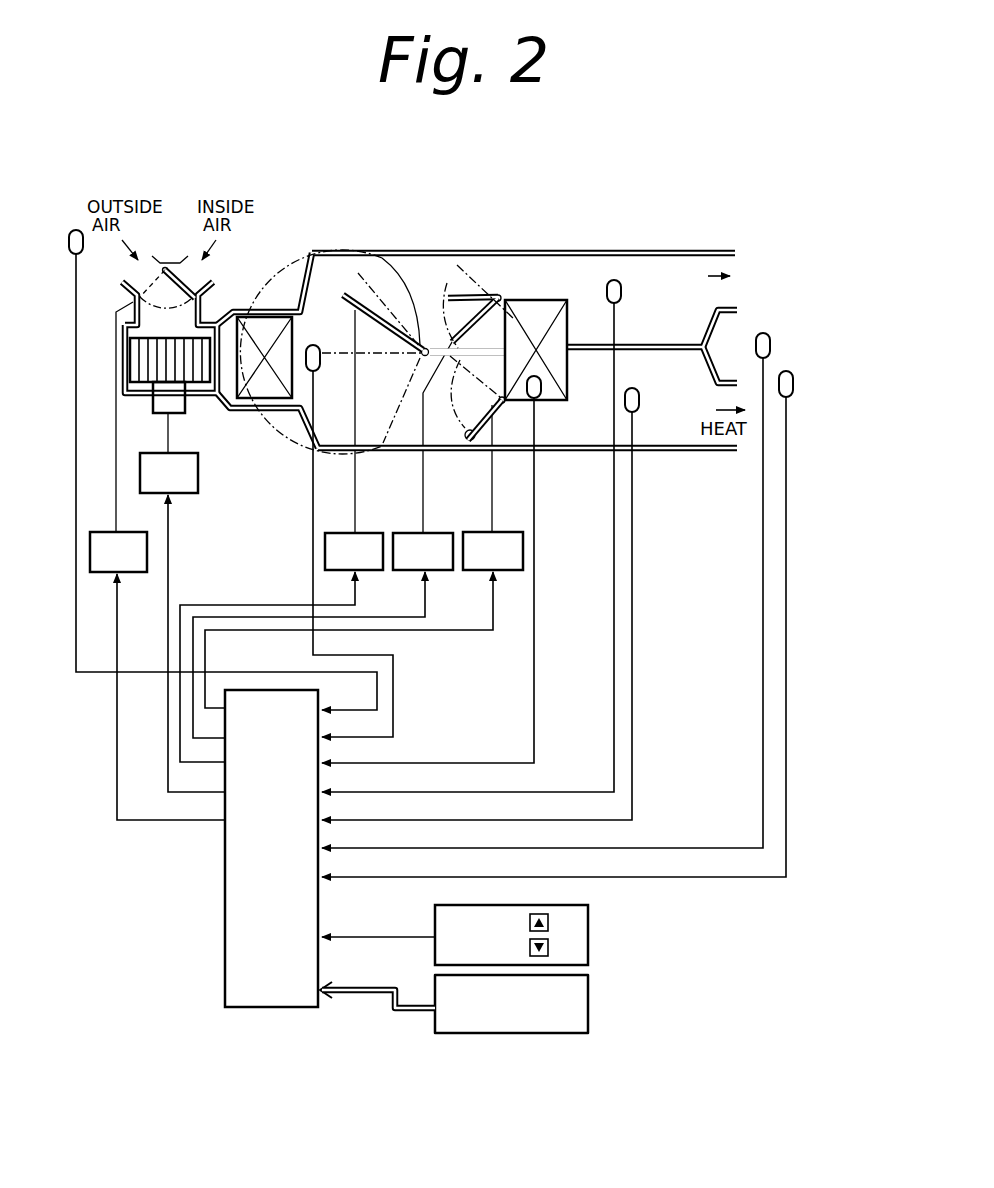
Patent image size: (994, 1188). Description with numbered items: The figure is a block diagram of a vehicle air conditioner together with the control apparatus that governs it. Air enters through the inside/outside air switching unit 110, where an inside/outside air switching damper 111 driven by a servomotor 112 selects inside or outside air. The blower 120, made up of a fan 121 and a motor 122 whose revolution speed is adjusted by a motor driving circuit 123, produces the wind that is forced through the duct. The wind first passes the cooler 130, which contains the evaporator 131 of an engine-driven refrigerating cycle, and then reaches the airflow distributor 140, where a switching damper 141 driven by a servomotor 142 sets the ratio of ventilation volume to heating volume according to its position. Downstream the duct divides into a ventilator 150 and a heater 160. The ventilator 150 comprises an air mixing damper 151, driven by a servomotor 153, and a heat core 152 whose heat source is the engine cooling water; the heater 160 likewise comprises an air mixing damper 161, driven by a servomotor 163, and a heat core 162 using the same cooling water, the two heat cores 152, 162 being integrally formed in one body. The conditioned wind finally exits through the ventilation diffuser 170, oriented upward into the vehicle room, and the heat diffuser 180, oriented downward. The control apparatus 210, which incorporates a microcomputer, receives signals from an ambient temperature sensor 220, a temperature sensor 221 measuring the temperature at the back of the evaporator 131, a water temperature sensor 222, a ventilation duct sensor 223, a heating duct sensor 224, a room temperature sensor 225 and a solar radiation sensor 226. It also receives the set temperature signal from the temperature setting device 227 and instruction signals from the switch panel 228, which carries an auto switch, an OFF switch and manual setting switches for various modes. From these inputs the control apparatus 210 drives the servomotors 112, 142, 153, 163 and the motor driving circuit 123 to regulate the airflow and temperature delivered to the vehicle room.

The inside/outside air switching unit 110 is at (175, 232).
The inside/outside air switching damper 111 is at (192, 278).
The servomotor 112 is at (140, 574).
The blower 120 is at (220, 454).
The fan 121 is at (142, 394).
The motor 122 is at (186, 404).
The motor driving circuit 123 is at (192, 495).
The cooler 130 is at (283, 238).
The evaporator 131 is at (266, 312).
The airflow distributor 140 is at (384, 250).
The switching damper 141 is at (403, 300).
The servomotor 142 is at (378, 533).
The ventilator 150 is at (545, 262).
The air mixing damper 151 is at (503, 282).
The heat core 152 is at (505, 298).
The servomotor 153 is at (445, 572).
The heater 160 is at (556, 465).
The air mixing damper 161 is at (450, 402).
The heat core 162 is at (512, 402).
The servomotor 163 is at (510, 574).
The ventilation diffuser 170 is at (738, 268).
The heat diffuser 180 is at (756, 398).
The control apparatus 210 is at (225, 920).
The ambient temperature sensor 220 is at (76, 228).
The temperature sensor 221 is at (311, 380).
The water temperature sensor 222 is at (546, 402).
The ventilation duct sensor 223 is at (620, 282).
The heating duct sensor 224 is at (632, 386).
The room temperature sensor 225 is at (771, 345).
The solar radiation sensor 226 is at (794, 385).
The temperature setting device 227 is at (588, 945).
The switch panel 228 is at (588, 1005).